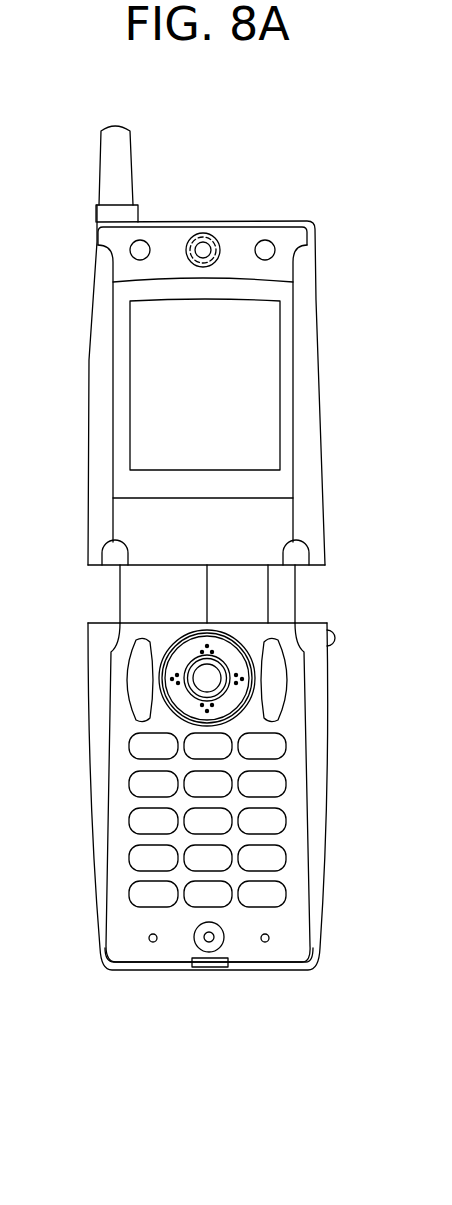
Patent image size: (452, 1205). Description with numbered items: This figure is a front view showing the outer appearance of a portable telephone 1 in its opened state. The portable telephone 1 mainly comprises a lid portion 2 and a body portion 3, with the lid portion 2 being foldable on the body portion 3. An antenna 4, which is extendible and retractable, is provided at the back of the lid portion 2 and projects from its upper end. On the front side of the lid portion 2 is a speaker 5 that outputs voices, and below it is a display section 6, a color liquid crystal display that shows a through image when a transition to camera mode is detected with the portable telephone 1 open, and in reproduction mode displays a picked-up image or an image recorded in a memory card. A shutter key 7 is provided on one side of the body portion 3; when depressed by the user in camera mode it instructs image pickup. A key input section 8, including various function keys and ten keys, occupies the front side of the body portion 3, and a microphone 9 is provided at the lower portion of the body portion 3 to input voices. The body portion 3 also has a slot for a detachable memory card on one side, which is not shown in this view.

The portable telephone 1 is at (201, 556).
The lid portion 2 is at (318, 302).
The body portion 3 is at (325, 762).
The antenna 4 is at (132, 147).
The speaker 5 is at (203, 233).
The display section 6 is at (268, 395).
The shutter key 7 is at (337, 641).
The key input section 8 is at (70, 633).
The microphone 9 is at (208, 952).